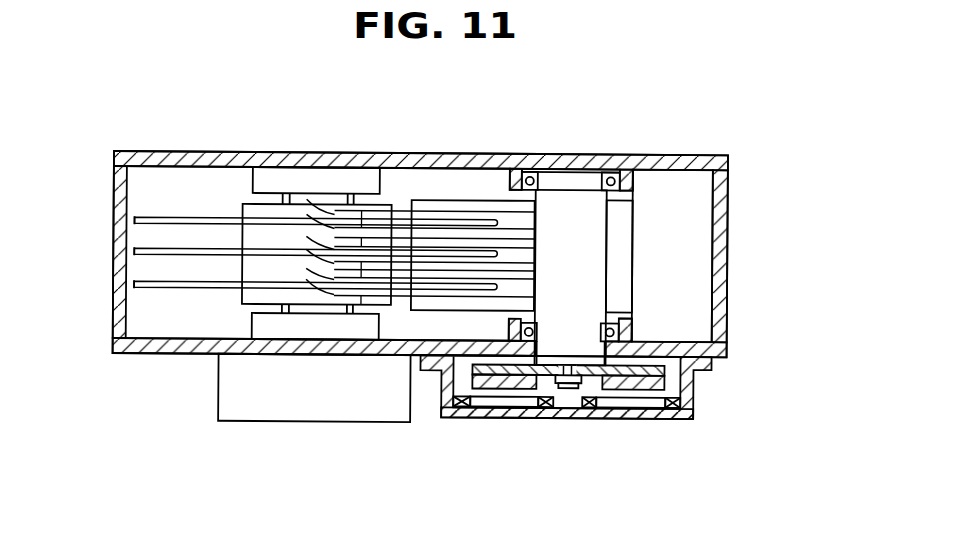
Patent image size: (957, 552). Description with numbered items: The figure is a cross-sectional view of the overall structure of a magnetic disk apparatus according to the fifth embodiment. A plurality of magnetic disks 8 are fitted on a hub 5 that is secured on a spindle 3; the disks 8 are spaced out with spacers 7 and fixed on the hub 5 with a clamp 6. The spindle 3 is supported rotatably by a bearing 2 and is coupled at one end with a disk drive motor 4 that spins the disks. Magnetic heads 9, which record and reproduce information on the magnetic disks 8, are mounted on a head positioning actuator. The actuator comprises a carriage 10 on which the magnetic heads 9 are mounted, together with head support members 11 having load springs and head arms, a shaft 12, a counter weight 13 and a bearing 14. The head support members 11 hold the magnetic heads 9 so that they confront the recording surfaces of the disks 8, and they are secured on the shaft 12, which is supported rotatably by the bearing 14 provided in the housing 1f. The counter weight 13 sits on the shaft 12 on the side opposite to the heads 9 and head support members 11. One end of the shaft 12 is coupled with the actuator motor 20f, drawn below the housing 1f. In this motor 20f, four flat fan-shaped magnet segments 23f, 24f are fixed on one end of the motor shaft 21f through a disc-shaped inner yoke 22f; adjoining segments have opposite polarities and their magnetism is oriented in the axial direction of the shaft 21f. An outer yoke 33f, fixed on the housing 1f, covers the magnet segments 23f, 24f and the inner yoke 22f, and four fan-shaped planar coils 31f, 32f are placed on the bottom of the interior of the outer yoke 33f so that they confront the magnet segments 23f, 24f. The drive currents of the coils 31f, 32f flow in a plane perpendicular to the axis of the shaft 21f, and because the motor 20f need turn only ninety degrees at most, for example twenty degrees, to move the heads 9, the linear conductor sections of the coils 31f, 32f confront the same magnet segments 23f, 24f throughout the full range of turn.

The housing 1f is at (113, 316).
The bearing 2 is at (243, 205).
The spindle 3 is at (255, 182).
The disk drive motor 4 is at (247, 408).
The hub 5 is at (215, 322).
The clamp 6 is at (243, 268).
The spacers 7 is at (222, 222).
The magnetic disks 8 is at (165, 270).
The magnetic heads 9 is at (312, 290).
The carriage 10 is at (660, 239).
The head support members 11 is at (450, 300).
The shaft 12 is at (562, 200).
The counter weight 13 is at (633, 218).
The bearing 14 is at (523, 170).
The motor 20f is at (703, 386).
The motor shaft 21f is at (578, 354).
The inner yoke 22f is at (585, 369).
The magnet segments 23f is at (640, 386).
The magnet segments 24f is at (500, 381).
The coils 31f is at (677, 411).
The coils 32f is at (460, 401).
The outer yoke 33f is at (698, 408).